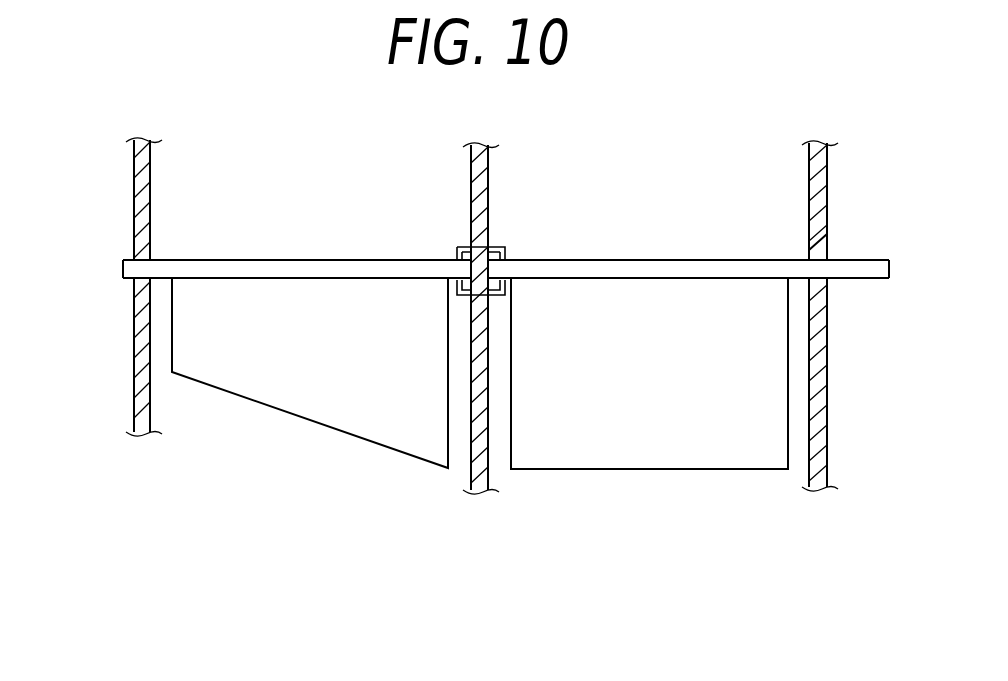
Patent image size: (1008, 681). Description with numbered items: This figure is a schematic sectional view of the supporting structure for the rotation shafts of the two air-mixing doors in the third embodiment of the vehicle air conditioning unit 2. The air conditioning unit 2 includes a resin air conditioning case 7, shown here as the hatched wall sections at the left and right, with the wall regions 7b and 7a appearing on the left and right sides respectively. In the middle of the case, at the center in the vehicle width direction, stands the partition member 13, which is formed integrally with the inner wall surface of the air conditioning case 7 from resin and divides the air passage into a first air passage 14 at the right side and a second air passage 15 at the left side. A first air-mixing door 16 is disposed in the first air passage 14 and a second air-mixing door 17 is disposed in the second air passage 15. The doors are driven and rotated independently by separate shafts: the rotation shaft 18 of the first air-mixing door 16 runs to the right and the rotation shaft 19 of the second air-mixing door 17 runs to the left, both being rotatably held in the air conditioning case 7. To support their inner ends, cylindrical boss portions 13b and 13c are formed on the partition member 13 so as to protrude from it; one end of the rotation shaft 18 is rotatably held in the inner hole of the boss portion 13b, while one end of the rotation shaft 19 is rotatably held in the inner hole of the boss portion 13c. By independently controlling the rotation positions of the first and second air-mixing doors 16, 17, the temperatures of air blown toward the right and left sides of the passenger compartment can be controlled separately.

The air conditioning unit 2 is at (833, 175).
The air conditioning case 7 is at (828, 203).
The post portion 7a is at (828, 245).
The post portion 7b is at (140, 243).
The partition member 13 is at (470, 472).
The boss portion 13b is at (505, 250).
The boss portion 13c is at (455, 250).
The first air passage 14 is at (660, 488).
The second air passage 15 is at (300, 445).
The first air-mixing door 16 is at (770, 378).
The second air-mixing door 17 is at (190, 328).
The rotation shaft 18 is at (692, 262).
The rotation shaft 19 is at (224, 268).